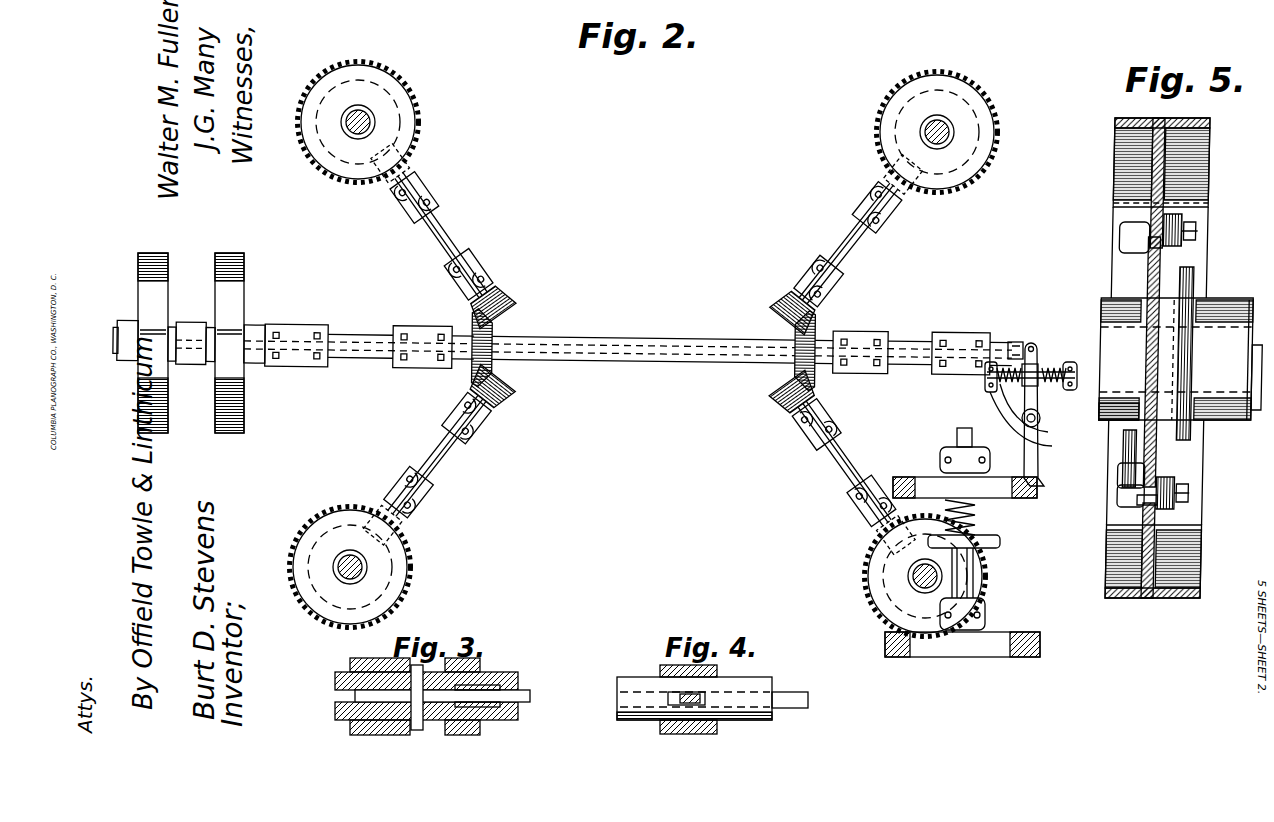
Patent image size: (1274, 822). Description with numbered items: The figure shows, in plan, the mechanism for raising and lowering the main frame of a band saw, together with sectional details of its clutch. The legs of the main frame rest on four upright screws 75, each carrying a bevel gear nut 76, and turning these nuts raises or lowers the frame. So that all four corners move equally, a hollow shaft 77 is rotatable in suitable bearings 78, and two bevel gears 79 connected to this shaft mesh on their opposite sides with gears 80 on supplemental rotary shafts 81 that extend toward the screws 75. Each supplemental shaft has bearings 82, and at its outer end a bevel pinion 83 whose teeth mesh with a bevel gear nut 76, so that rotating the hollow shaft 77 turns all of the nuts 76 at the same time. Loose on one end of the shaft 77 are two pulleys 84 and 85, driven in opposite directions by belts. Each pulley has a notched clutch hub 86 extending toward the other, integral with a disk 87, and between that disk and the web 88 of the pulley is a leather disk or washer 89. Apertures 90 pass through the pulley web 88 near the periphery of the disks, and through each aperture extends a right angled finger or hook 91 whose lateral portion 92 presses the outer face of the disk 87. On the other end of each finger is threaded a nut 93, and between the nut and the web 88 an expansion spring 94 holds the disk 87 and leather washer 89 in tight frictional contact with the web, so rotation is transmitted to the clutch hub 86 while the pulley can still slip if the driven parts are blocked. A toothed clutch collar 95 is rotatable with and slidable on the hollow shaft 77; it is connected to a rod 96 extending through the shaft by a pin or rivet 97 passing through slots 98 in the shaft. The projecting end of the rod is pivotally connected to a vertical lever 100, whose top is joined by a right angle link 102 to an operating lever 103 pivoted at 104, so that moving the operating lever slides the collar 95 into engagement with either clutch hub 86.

In FIG. 2, the upright screws 75 is at (372, 114).
In FIG. 2, the bevel gear nut 76 is at (416, 113).
In FIG. 2, the hollow shaft 77 is at (640, 338).
In FIG. 2, the bearings 78 is at (300, 320).
In FIG. 2, the bevel gears 79 is at (495, 318).
In FIG. 2, the gears 80 is at (508, 296).
In FIG. 2, the supplemental rotary shafts 81 is at (455, 234).
In FIG. 2, the bearings 82 is at (426, 193).
In FIG. 2, the bevel pinion 83 is at (390, 185).
In FIG. 2, the pulley 84 is at (157, 254).
In FIG. 3, the pulley 84 is at (365, 658).
In FIG. 2, the pulley 85 is at (233, 254).
In FIG. 3, the pulley 85 is at (472, 660).
In FIG. 5, the pulley 85 is at (1183, 121).
In FIG. 2, the notched clutch hub 86 is at (208, 362).
In FIG. 5, the notched clutch hub 86 is at (1104, 335).
In FIG. 5, the disk 87 is at (1128, 441).
In FIG. 5, the pulley web 88 is at (1165, 192).
In FIG. 5, the leather disk or washer 89 is at (1110, 418).
In FIG. 5, the apertures 90 is at (1140, 505).
In FIG. 5, the right angled finger or hook 91 is at (1118, 494).
In FIG. 5, the lateral portion 92 is at (1118, 476).
In FIG. 5, the nut 93 is at (1192, 488).
In FIG. 5, the expansion spring 94 is at (1168, 481).
In FIG. 2, the toothed clutch collar 95 is at (192, 318).
In FIG. 3, the toothed clutch collar 95 is at (414, 665).
In FIG. 4, the toothed clutch collar 95 is at (660, 676).
In FIG. 2, the rod 96 is at (590, 338).
In FIG. 3, the rod 96 is at (516, 696).
In FIG. 4, the rod 96 is at (797, 696).
In FIG. 3, the pin or rivet 97 is at (340, 712).
In FIG. 4, the pin or rivet 97 is at (645, 712).
In FIG. 3, the slots 98 is at (500, 684).
In FIG. 4, the slots 98 is at (715, 710).
In FIG. 2, the vertical lever 100 is at (1018, 344).
In FIG. 2, the right angle link 102 is at (1034, 346).
In FIG. 2, the operating lever 103 is at (1020, 392).
In FIG. 2, the pivot 104 is at (1010, 430).